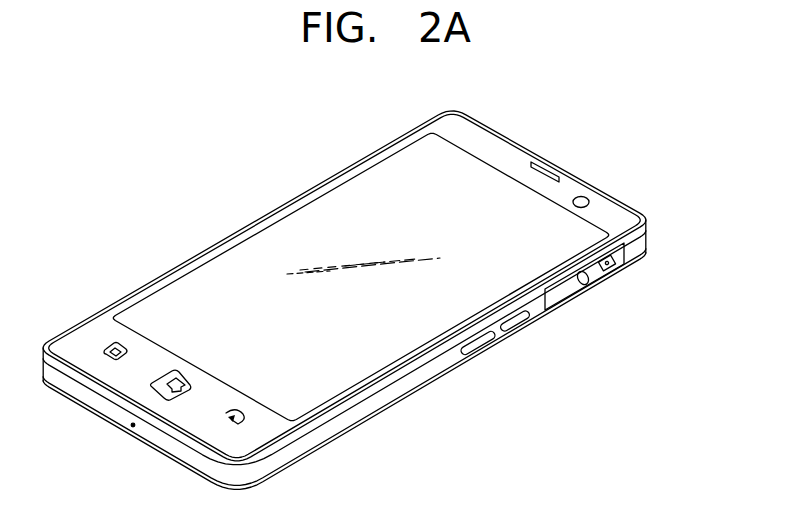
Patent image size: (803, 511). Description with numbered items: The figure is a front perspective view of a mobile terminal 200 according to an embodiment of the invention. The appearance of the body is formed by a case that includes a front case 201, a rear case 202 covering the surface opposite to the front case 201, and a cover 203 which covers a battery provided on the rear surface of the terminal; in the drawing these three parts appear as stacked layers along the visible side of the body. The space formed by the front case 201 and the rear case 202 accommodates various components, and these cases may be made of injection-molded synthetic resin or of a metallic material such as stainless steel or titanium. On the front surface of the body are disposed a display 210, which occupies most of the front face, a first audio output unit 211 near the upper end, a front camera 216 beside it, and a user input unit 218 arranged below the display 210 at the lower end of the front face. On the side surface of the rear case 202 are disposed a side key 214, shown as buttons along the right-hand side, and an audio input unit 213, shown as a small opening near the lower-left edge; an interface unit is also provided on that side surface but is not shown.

The mobile terminal 200 is at (290, 170).
The front case 201 is at (647, 223).
The rear case 202 is at (641, 241).
The cover 203 is at (646, 257).
The display 210 is at (402, 175).
The first audio output unit 211 is at (550, 166).
The audio input unit 213 is at (130, 428).
The side key 214 is at (515, 322).
The front camera 216 is at (584, 197).
The user input unit 218 is at (158, 380).